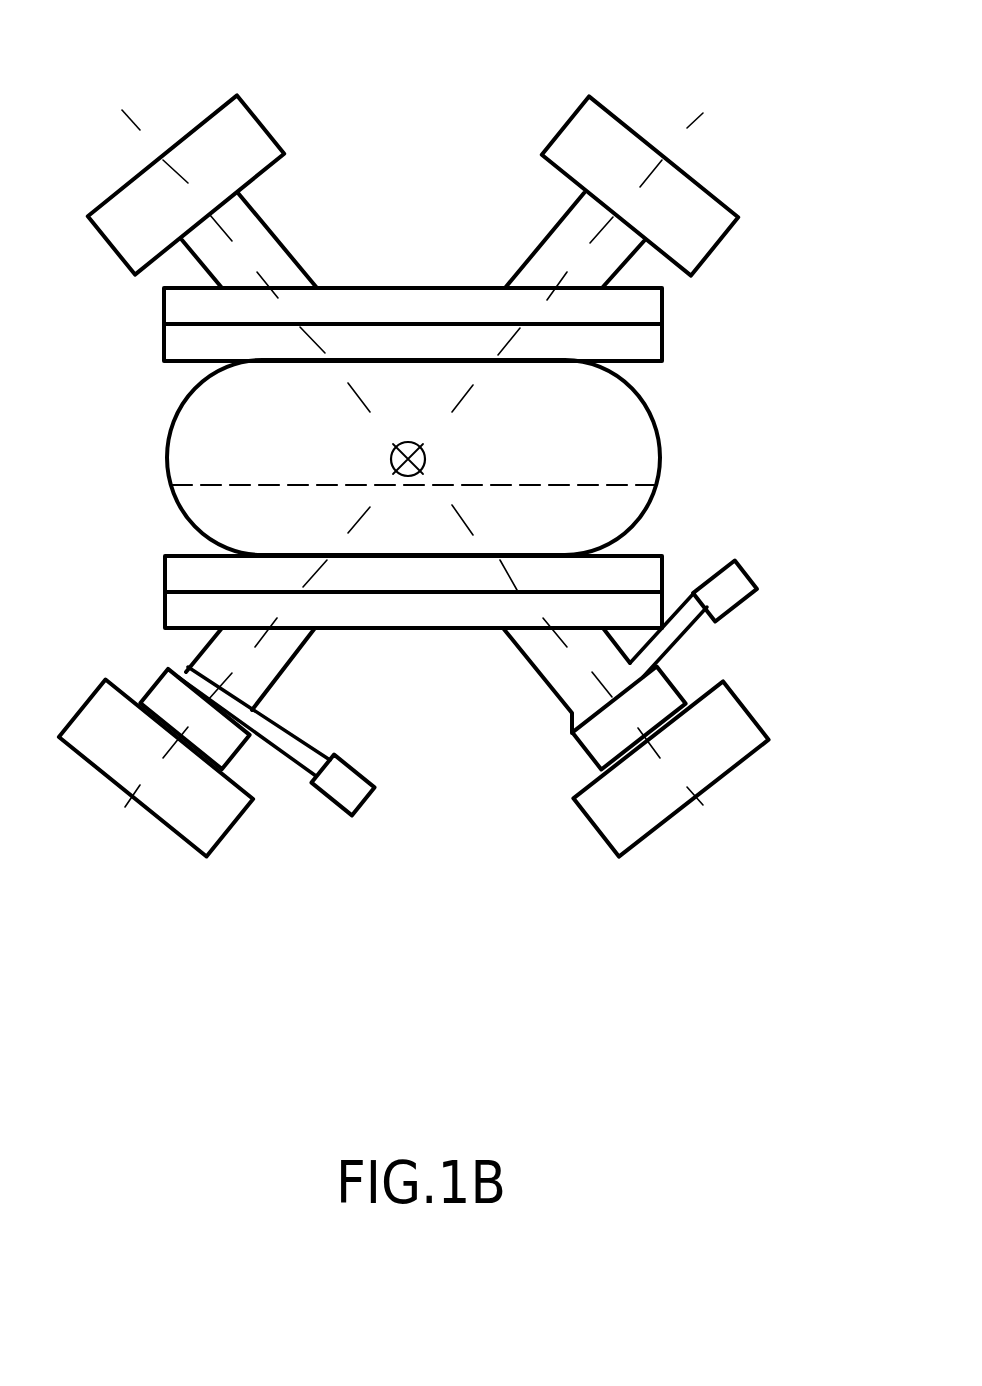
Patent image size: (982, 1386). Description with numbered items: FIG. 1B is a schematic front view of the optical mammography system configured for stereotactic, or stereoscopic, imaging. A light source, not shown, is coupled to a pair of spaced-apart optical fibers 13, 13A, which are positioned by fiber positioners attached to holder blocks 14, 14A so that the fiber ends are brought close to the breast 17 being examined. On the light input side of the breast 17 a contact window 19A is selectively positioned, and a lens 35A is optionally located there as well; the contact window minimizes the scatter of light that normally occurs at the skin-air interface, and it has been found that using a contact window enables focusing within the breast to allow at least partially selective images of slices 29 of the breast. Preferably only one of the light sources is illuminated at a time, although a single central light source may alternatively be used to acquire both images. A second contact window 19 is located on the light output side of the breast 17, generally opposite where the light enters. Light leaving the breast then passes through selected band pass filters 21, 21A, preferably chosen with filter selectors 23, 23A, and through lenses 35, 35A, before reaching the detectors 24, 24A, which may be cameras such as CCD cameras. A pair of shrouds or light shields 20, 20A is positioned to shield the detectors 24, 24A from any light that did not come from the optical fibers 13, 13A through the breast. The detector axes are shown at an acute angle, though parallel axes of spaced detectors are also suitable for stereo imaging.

The holder block 14A is at (192, 128).
The fiber holder block 14 is at (614, 113).
The optical fiber 13A is at (280, 242).
The optical fiber 13 is at (538, 246).
The contact window 19A is at (662, 346).
The breast 17 is at (580, 439).
The slices 29 is at (232, 485).
The contact window 19 is at (654, 553).
The lens 35A is at (164, 310).
The lens 35 is at (668, 695).
The light shield 20A is at (188, 673).
The light shield 20 is at (522, 655).
The filter 21A is at (193, 668).
The band pass filter 21 is at (683, 612).
The filter selector 23A is at (370, 795).
The filter selector 23 is at (750, 576).
The detector 24A is at (153, 822).
The detector 24 is at (737, 765).